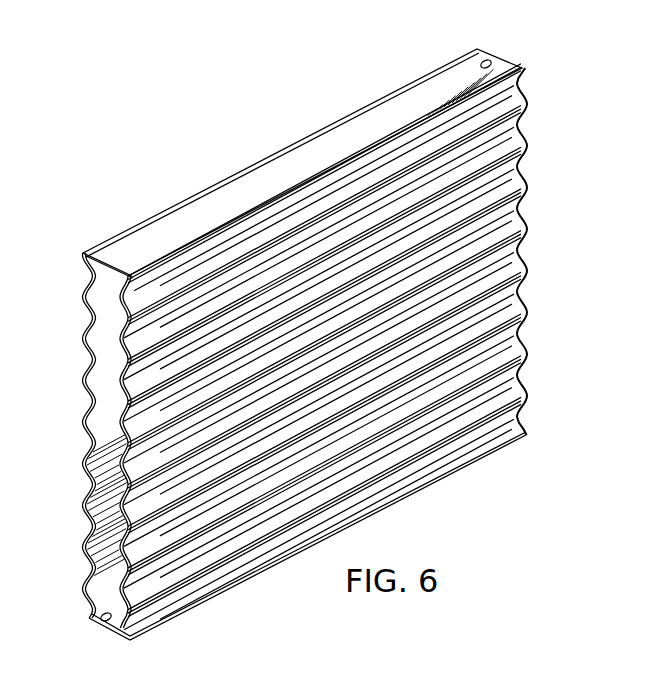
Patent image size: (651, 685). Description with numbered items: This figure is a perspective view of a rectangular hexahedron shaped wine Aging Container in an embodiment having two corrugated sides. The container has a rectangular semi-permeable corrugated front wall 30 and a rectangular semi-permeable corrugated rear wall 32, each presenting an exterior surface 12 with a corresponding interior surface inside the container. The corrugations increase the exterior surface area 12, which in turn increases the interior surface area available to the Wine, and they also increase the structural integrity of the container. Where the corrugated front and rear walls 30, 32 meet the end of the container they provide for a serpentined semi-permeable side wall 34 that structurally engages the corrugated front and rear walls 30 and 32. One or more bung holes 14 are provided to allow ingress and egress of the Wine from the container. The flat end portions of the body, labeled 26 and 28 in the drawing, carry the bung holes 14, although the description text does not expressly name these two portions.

The exterior surface 12 is at (336, 164).
The bung hole 14 is at (489, 60).
The upper flange 26 is at (277, 177).
The lower flange 28 is at (110, 636).
The corrugated front wall 30 is at (522, 285).
The corrugated rear wall 32 is at (84, 422).
The serpentined semi-permeable side wall 34 is at (97, 342).